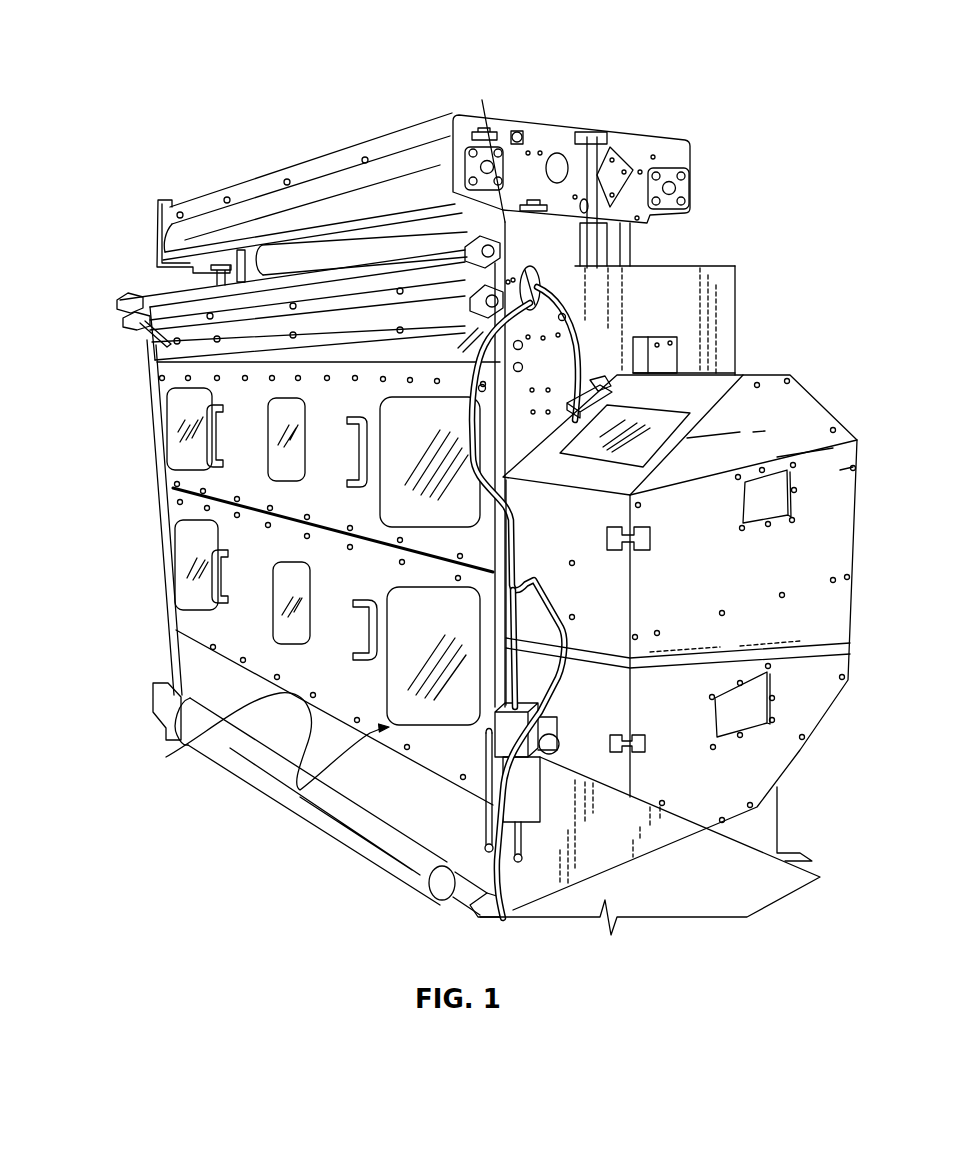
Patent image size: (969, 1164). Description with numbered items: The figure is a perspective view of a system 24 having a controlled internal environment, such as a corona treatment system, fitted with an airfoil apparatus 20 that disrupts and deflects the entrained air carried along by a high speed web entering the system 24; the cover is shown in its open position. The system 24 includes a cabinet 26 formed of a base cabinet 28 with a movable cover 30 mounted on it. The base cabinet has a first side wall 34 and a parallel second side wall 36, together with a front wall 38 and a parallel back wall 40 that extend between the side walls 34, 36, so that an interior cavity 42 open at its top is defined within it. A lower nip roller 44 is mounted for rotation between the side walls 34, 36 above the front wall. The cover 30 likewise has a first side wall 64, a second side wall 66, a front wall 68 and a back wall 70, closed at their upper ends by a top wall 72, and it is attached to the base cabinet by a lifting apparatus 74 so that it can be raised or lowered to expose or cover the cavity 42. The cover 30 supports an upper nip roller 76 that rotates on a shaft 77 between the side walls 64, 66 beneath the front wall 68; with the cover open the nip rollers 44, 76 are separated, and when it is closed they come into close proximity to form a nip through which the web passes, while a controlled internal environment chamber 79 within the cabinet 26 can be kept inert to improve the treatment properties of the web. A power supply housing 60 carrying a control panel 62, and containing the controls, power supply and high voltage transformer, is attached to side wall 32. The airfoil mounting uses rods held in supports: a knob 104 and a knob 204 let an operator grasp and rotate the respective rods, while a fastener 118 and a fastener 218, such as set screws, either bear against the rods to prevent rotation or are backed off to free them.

The airfoil apparatus 20 is at (130, 382).
The system 24 is at (681, 228).
The cabinet 26 is at (158, 571).
The base cabinet 28 is at (275, 791).
The movable cover 30 is at (692, 135).
The side wall 32 is at (678, 302).
The first side wall 34 is at (168, 492).
The second side wall 36 is at (222, 478).
The front wall 38 is at (733, 322).
The back wall 40 is at (260, 741).
The interior cavity 42 is at (651, 262).
The lower nip roller 44 is at (413, 280).
The power supply housing 60 is at (835, 532).
The control panel 62 is at (647, 460).
The first side wall 64 is at (638, 143).
The second side wall 66 is at (158, 199).
The front wall 68 is at (397, 147).
The back wall 70 is at (688, 168).
The top wall 72 is at (550, 120).
The lifting apparatus 74 is at (133, 329).
The upper nip roller 76 is at (300, 205).
The shaft 77 is at (512, 127).
The controlled internal environment chamber 79 is at (715, 353).
The knob 104 is at (460, 230).
The fastener 118 is at (118, 311).
The knob 204 is at (517, 130).
The fastener 218 is at (138, 328).